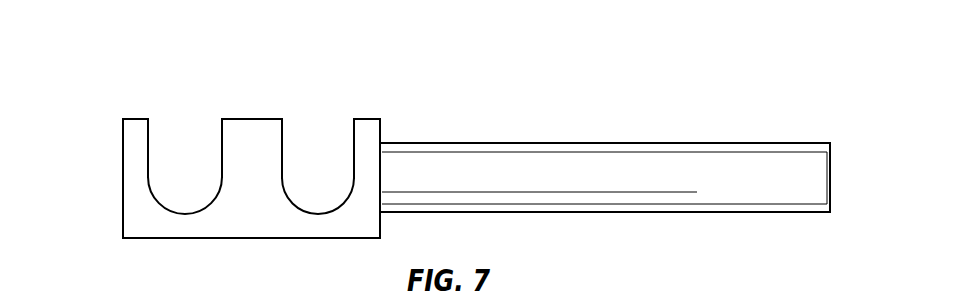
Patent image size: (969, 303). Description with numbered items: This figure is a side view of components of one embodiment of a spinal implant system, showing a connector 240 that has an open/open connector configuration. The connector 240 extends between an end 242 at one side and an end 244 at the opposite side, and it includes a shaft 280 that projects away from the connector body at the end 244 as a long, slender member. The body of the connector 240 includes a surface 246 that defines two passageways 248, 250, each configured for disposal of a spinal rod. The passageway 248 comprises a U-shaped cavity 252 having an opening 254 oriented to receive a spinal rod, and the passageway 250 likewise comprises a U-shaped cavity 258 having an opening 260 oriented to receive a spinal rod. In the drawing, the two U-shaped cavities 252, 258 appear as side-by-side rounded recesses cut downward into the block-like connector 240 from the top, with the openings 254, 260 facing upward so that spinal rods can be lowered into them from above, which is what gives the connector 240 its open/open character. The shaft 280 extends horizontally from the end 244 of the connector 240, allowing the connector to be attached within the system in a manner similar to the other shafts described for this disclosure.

The connector 240 is at (370, 128).
The end 242 is at (123, 225).
The end 244 is at (381, 131).
The surface 246 is at (258, 118).
The passageway 248 is at (325, 147).
The passageway 250 is at (165, 128).
The U-shaped cavity 252 is at (307, 132).
The opening 254 is at (338, 135).
The U-shaped cavity 258 is at (207, 137).
The opening 260 is at (188, 128).
The shaft 280 is at (695, 153).